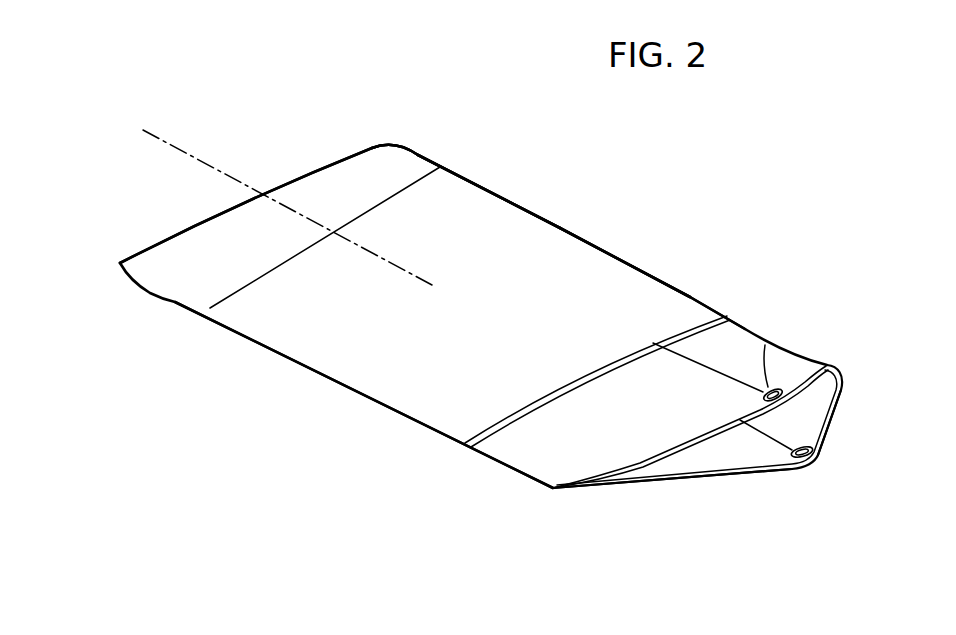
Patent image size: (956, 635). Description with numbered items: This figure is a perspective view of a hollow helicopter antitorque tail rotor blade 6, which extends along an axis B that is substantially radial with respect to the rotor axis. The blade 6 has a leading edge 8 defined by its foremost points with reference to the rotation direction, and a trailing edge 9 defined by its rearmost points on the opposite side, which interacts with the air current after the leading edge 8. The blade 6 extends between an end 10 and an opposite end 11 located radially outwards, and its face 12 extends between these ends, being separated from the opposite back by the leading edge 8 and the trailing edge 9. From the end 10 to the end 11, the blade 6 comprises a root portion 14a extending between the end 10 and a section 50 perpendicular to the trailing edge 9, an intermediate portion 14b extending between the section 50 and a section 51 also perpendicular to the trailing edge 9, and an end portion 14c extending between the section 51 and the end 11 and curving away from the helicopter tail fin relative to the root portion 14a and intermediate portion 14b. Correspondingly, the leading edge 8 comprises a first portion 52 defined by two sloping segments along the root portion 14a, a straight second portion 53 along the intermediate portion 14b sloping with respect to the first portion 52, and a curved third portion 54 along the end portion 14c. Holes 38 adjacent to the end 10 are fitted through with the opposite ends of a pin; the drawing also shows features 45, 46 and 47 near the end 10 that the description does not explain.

The blade 6 is at (469, 103).
The leading edge 8 is at (337, 110).
The trailing edge 9 is at (337, 396).
The end 10 is at (604, 511).
The end 11 is at (296, 165).
The face 12 is at (467, 213).
The root portion 14a is at (752, 347).
The intermediate portion 14b is at (537, 260).
The end portion 14c is at (383, 162).
The holes 38 is at (778, 388).
The flange 45 is at (832, 362).
The flange end 46 is at (785, 360).
The flange edge 47 is at (697, 437).
The section 50 is at (703, 327).
The section 51 is at (440, 165).
The first portion 52 is at (765, 345).
The second portion 53 is at (605, 250).
The third portion 54 is at (270, 189).
The axis B is at (213, 167).